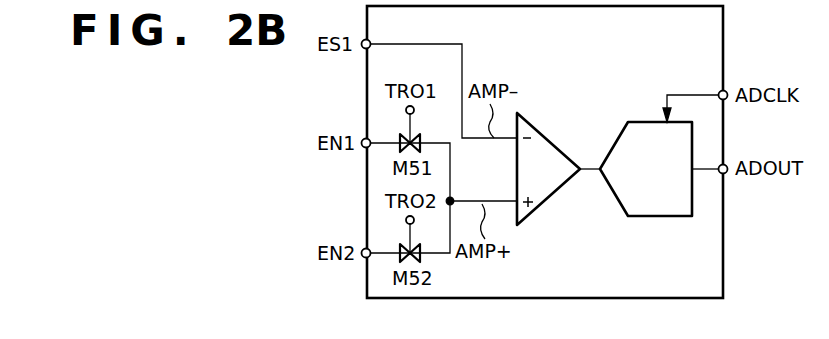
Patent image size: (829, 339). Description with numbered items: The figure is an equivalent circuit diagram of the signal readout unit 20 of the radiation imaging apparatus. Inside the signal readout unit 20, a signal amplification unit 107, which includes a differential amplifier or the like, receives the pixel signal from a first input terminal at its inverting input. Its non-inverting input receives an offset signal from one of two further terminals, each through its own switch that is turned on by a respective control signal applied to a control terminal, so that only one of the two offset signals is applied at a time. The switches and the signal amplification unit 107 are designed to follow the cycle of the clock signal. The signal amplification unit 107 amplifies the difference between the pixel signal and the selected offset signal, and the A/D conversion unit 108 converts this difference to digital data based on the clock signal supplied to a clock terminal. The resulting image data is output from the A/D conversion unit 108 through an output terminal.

The signal readout unit 20 is at (725, 30).
The signal amplification unit 107 is at (541, 129).
The A/D conversion unit 108 is at (644, 121).